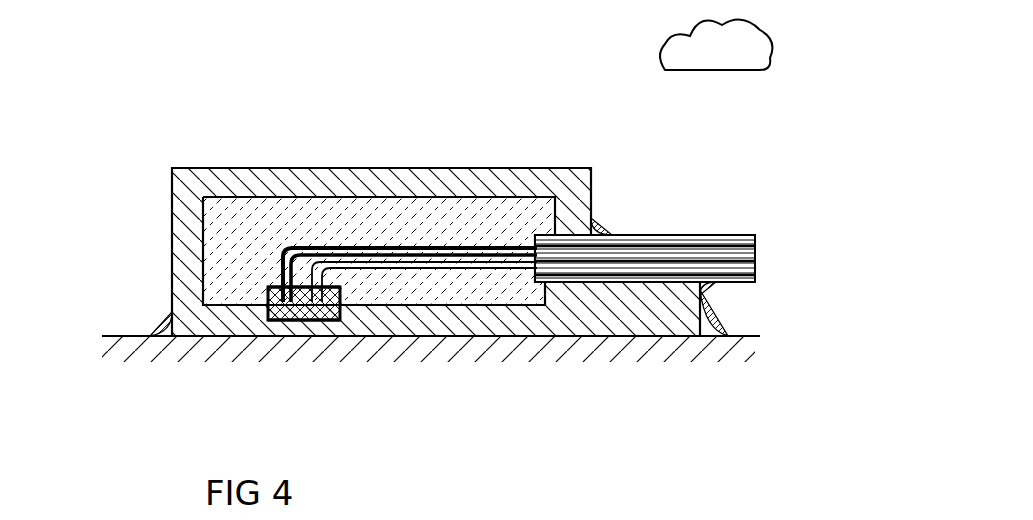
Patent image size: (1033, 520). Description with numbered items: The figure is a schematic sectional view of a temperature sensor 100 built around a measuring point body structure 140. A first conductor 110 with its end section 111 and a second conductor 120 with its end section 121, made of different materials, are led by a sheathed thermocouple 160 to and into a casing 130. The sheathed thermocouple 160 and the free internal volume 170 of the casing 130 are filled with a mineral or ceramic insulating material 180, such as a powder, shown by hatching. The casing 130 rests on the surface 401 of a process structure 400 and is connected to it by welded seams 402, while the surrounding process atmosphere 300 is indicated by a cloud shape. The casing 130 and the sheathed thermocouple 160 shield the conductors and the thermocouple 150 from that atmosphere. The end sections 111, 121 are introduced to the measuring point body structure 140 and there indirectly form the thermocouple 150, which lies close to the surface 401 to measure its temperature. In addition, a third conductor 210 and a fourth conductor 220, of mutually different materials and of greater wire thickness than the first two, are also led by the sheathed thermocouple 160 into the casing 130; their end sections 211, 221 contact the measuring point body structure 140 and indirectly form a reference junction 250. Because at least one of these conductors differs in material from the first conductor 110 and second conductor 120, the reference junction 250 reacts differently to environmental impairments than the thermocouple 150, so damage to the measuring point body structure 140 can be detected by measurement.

The temperature sensor 100 is at (234, 122).
The first conductor 110 is at (415, 248).
The end section of the first conductor 111 is at (293, 322).
The second conductor 120 is at (470, 256).
The end section of the second conductor 121 is at (345, 307).
The casing 130 is at (409, 240).
The measuring point body structure 140 is at (266, 300).
The thermocouple 150 is at (331, 324).
The sheathed thermocouple 160 is at (660, 235).
The free internal volume 170 is at (220, 213).
The insulating material 180 is at (703, 237).
The third conductor 210 is at (275, 168).
The end section of the third conductor 211 is at (232, 312).
The fourth conductor 220 is at (372, 168).
The end section of the fourth conductor 221 is at (300, 322).
The reference junction 250 is at (279, 322).
The process atmosphere 300 is at (742, 61).
The process structure 400 is at (525, 352).
The surface of the process structure 401 is at (683, 335).
The welded seams 402 is at (158, 329).